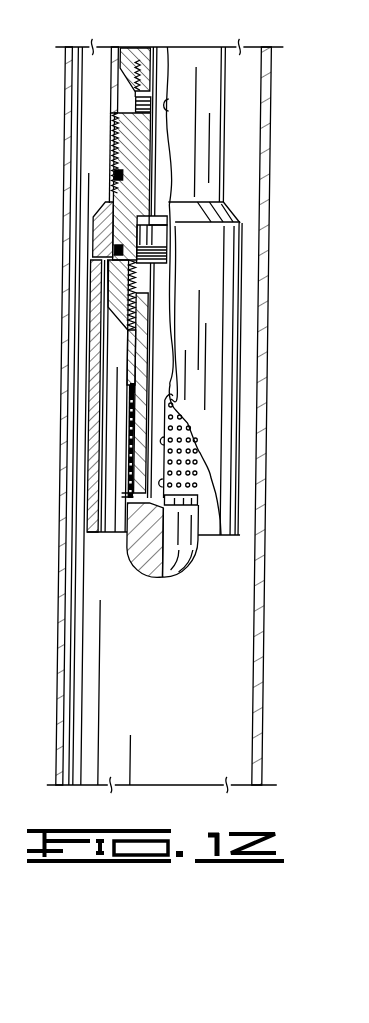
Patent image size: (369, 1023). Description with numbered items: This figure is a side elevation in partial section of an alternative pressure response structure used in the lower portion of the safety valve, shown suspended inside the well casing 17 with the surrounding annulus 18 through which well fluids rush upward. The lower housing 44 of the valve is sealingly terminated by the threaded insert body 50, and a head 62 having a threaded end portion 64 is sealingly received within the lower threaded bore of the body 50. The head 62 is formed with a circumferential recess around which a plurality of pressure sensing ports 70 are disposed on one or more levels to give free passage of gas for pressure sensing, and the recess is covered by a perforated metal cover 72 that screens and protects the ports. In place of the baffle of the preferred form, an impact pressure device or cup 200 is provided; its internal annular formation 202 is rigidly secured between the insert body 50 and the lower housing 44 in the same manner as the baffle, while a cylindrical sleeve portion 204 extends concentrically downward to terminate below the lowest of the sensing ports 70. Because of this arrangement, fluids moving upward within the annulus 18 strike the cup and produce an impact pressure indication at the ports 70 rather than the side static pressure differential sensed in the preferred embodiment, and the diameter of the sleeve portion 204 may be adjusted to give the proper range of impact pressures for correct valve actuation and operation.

The casing 17 is at (268, 127).
The annulus 18 is at (240, 645).
The lower housing 44 is at (113, 90).
The insert body 50 is at (133, 195).
The head 62 is at (158, 555).
The threaded end portion 64 is at (140, 278).
The pressure sensing ports 70 is at (136, 490).
The perforated metal cover 72 is at (135, 433).
The impact pressure device or cup 200 is at (216, 345).
The internal annular formation 202 is at (109, 232).
The cylindrical sleeve portion 204 is at (244, 495).